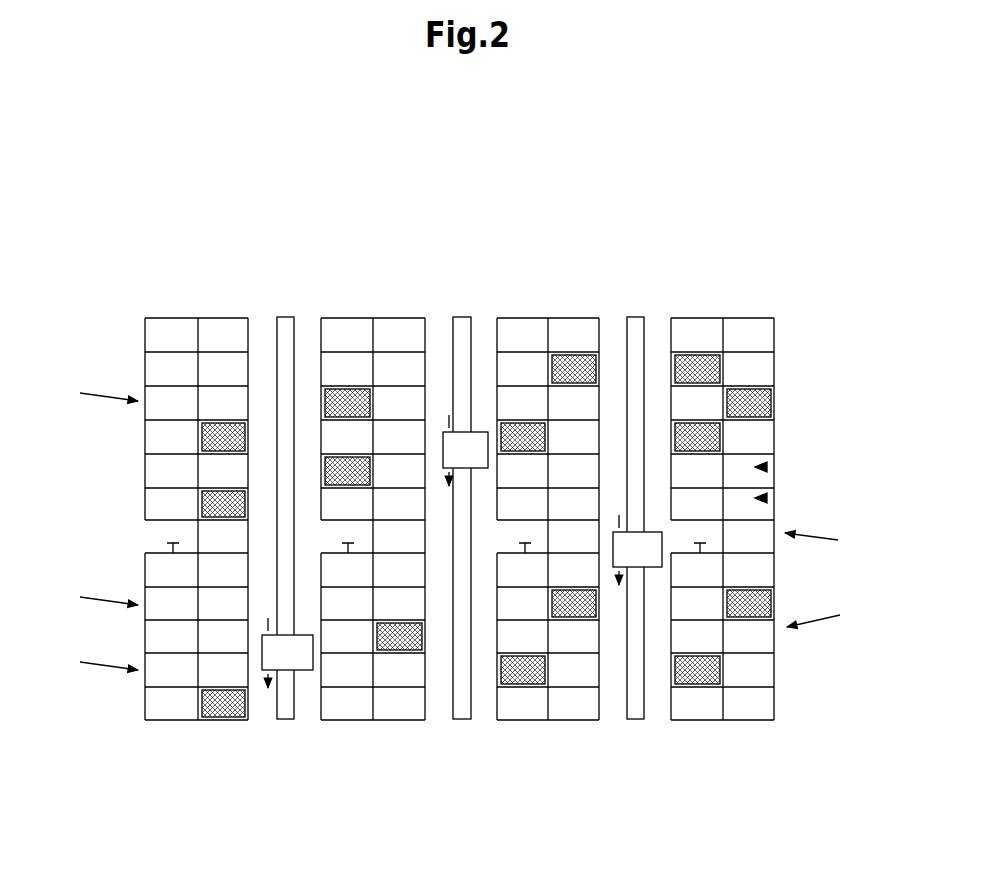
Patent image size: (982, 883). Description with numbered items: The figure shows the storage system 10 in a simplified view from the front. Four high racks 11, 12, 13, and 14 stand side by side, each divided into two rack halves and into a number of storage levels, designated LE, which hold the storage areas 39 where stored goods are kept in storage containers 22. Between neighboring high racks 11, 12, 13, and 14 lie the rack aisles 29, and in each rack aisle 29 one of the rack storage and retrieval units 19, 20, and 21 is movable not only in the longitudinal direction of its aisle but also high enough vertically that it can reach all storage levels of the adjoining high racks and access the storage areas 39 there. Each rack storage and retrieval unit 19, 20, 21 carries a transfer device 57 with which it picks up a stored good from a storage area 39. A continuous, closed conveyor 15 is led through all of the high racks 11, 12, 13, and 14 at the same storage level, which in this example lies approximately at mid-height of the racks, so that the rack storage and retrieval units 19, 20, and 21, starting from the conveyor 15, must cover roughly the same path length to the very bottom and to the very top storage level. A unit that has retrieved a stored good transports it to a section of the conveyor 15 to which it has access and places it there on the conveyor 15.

The storage system 10 is at (722, 757).
The high rack 11 is at (148, 318).
The high rack 12 is at (325, 318).
The high rack 13 is at (560, 318).
The high rack 14 is at (773, 482).
The conveyor 15 is at (172, 548).
The rack storage and retrieval unit 19 is at (287, 713).
The rack storage and retrieval unit 20 is at (463, 713).
The rack storage and retrieval unit 21 is at (638, 713).
The storage container 22 is at (775, 400).
The rack aisle 29 is at (254, 312).
The storage area 39 is at (778, 499).
The transfer device 57 is at (462, 551).